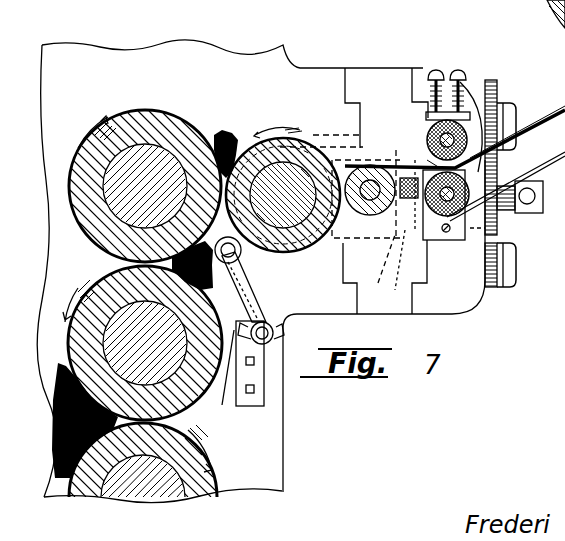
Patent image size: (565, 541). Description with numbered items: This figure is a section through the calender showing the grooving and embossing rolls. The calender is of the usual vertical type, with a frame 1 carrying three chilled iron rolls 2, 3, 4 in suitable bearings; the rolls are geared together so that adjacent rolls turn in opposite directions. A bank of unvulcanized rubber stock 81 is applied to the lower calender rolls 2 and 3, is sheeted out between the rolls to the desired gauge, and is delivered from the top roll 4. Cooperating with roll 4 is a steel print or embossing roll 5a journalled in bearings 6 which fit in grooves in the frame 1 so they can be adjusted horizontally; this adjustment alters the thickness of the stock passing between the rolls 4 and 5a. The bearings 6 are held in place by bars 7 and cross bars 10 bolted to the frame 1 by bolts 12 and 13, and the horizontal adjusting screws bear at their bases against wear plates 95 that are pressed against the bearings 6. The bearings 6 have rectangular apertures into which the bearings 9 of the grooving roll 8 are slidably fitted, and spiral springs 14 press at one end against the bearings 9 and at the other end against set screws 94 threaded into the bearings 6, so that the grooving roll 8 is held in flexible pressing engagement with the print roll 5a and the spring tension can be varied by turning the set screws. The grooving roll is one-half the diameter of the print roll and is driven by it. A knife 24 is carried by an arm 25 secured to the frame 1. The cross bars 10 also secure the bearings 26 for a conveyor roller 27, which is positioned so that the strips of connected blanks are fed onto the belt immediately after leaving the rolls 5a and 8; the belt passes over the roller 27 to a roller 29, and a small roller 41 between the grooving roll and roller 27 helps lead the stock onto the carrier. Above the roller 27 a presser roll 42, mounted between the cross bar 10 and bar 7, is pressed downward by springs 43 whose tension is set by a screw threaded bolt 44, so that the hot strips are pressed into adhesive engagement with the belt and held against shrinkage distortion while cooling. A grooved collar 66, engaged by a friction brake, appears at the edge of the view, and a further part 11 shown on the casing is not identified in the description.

The frame 1 is at (275, 470).
The calender roll 2 is at (205, 484).
The calender roll 3 is at (104, 283).
The top calender roll 4 is at (152, 130).
The print or embossing roll 5a is at (246, 150).
The bearings 6 is at (379, 240).
The bars 7 is at (392, 73).
The grooving roll 8 is at (366, 158).
The bearings 9 is at (380, 267).
The cross bars 10 is at (460, 296).
The casing step 11 is at (349, 105).
The bolt 12 is at (508, 112).
The bolt 13 is at (500, 284).
The spiral springs 14 is at (418, 178).
The knife 24 is at (241, 258).
The arm 25 is at (256, 318).
The bearings 26 is at (490, 222).
The conveyor roller 27 is at (455, 224).
The roller 29 is at (544, 202).
The small roller 41 is at (428, 162).
The presser roll 42 is at (432, 138).
The springs 43 is at (466, 98).
The screw threaded bolt 44 is at (455, 70).
The grooved collar 66 is at (562, 272).
The bank of unvulcanized rubber stock 81 is at (63, 480).
The set screws 94 is at (398, 232).
The wear plates 95 is at (419, 224).